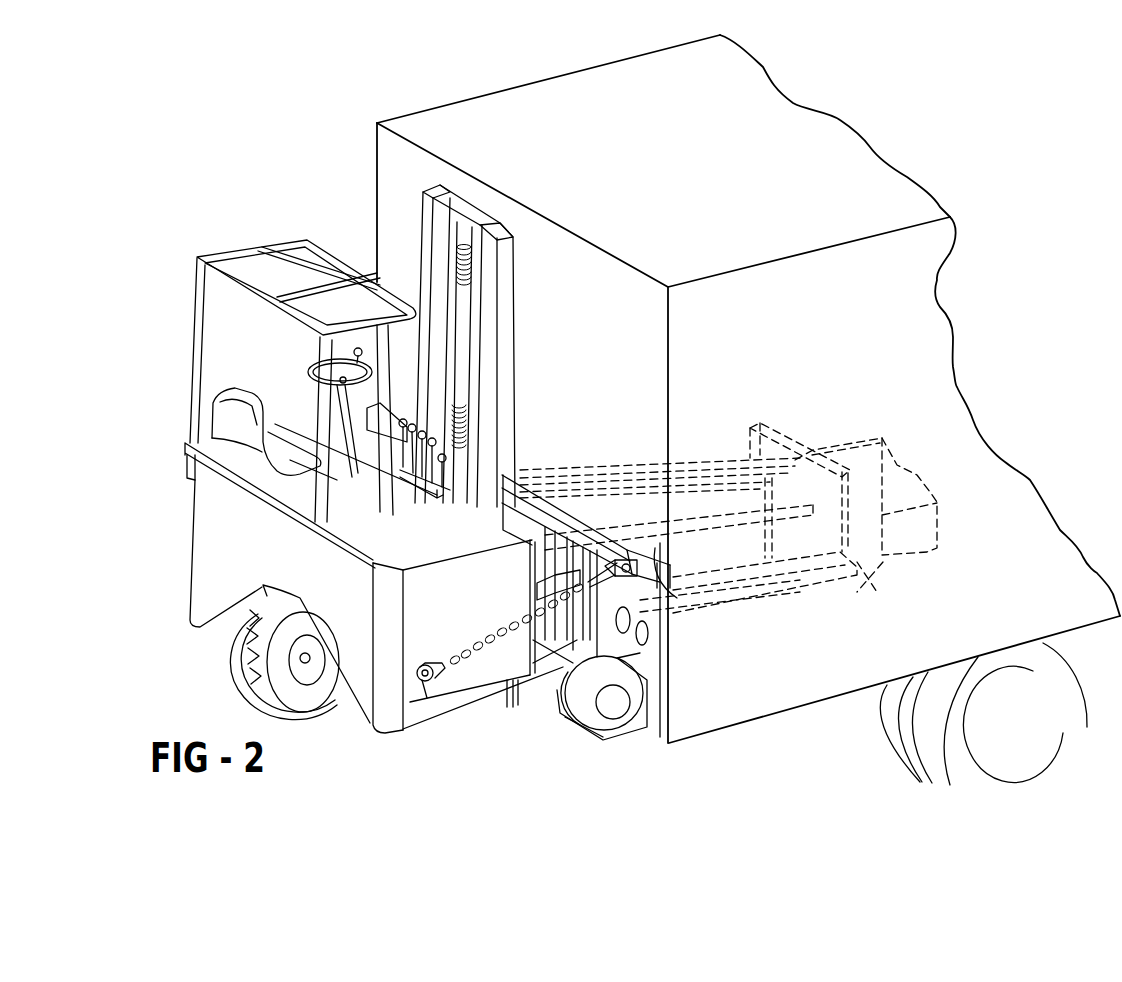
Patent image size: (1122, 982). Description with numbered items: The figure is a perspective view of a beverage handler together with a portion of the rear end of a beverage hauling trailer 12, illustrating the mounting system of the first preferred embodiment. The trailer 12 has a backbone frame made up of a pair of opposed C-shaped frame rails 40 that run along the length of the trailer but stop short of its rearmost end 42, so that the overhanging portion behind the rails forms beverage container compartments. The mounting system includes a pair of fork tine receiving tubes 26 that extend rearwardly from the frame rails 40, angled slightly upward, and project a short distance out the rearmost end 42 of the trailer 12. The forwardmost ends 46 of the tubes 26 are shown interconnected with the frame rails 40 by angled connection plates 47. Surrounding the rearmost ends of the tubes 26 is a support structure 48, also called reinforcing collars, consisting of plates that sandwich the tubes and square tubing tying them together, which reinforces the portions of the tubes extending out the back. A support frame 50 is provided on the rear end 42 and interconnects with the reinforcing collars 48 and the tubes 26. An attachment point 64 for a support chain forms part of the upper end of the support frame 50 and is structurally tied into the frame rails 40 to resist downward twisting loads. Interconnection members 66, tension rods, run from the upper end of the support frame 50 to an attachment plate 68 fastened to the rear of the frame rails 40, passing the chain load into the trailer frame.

The trailer 12 is at (1012, 192).
The rearmost end 42 is at (647, 308).
The frame rails 40 is at (840, 452).
The forwardmost ends 46 is at (753, 527).
The angled connection plates 47 is at (733, 547).
The fork tine receiving tubes 26 is at (673, 625).
The interconnection members 66 is at (648, 466).
The attachment plate 68 is at (773, 422).
The attachment point 64 is at (621, 553).
The support structure 48 is at (556, 642).
The support frame 50 is at (590, 648).